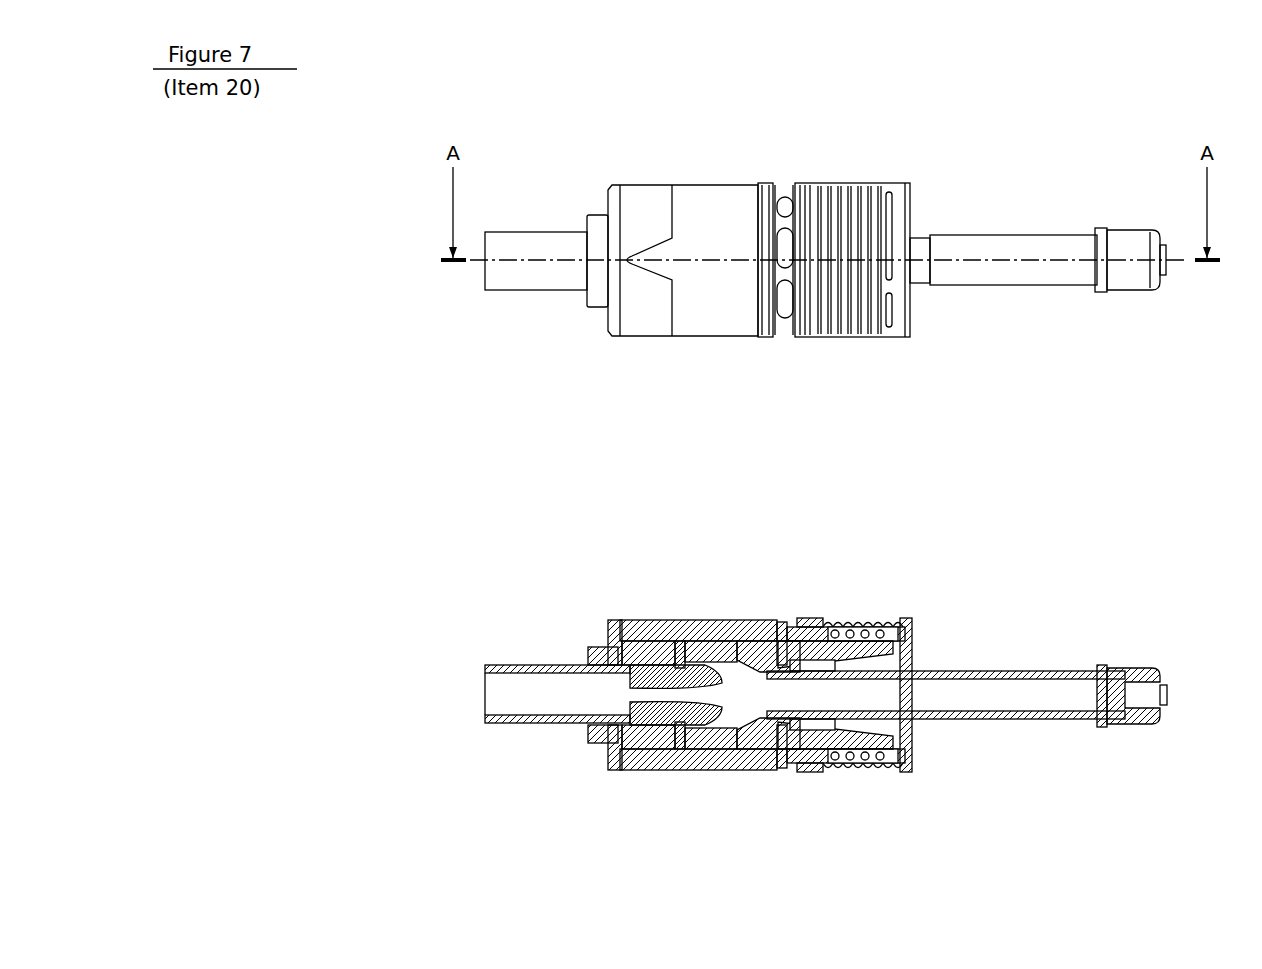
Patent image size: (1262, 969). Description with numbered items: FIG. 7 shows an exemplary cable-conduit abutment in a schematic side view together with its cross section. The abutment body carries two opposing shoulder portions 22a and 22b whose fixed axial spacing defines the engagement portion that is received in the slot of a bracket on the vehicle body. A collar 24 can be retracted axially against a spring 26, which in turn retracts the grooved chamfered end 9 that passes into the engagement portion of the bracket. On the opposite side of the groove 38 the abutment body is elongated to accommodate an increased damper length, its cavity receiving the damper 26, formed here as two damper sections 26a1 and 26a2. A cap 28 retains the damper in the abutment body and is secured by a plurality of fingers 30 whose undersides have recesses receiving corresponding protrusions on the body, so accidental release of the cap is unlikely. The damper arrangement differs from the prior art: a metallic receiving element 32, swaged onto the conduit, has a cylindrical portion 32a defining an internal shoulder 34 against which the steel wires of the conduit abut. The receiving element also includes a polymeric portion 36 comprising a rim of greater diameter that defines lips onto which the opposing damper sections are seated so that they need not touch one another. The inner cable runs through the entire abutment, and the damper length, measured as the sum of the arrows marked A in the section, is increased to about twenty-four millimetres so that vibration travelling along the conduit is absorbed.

The chamfered end 9 is at (785, 339).
The shoulder portion 22a is at (796, 339).
The shoulder portion 22b is at (776, 339).
The collar 24 is at (871, 182).
The damper 26 is at (881, 772).
The valve seat member 26a1 is at (650, 656).
The valve seat member 26a2 is at (712, 656).
The cap 28 is at (617, 338).
The fingers 30 is at (638, 298).
The receiving element 32 is at (515, 293).
The cylindrical portion 32a is at (566, 695).
The internal shoulder 34 is at (597, 749).
The polymeric portion 36 is at (678, 753).
The groove 38 is at (780, 182).